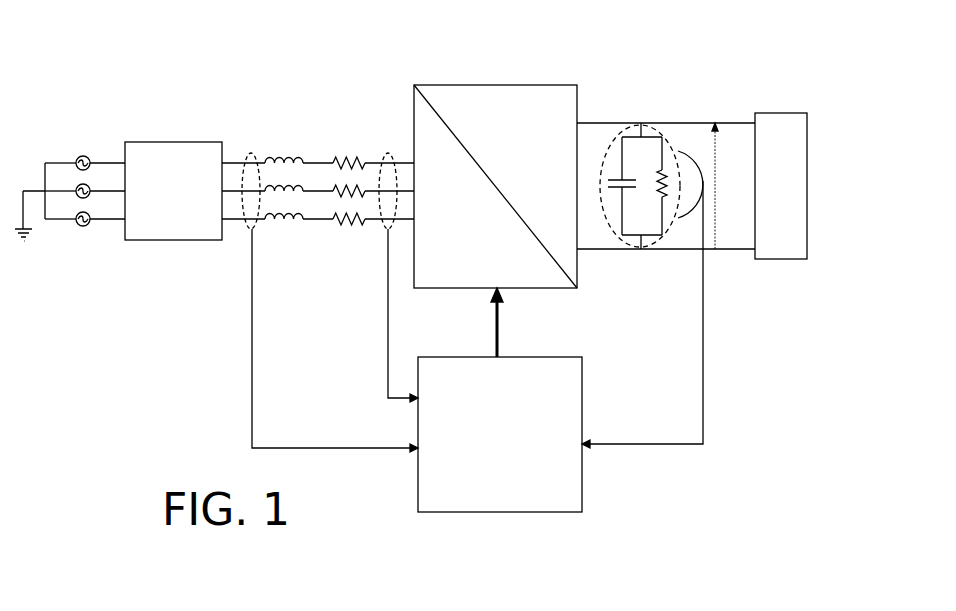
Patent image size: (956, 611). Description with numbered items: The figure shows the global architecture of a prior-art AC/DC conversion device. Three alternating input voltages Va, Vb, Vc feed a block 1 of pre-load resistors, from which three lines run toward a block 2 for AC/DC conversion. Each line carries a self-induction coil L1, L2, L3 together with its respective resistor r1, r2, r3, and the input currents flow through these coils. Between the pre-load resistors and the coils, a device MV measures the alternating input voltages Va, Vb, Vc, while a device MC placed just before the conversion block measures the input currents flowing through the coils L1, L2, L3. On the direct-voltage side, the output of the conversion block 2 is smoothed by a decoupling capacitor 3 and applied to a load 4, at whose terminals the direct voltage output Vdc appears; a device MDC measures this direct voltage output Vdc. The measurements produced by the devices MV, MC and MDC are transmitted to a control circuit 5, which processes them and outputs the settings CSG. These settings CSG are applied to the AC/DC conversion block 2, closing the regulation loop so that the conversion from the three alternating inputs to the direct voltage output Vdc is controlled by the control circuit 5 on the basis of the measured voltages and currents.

The block of pre-load resistors 1 is at (149, 150).
The block for AC/DC conversion 2 is at (494, 78).
The decoupling capacitor 3 is at (618, 136).
The load 4 is at (787, 118).
The control circuit 5 is at (517, 465).
The alternating input voltage Va is at (83, 155).
The alternating input voltage Vb is at (79, 186).
The alternating input voltage Vc is at (82, 227).
The self-induction coil L1 is at (288, 160).
The self-induction coil L2 is at (270, 188).
The self-induction coil L3 is at (290, 222).
The resistor r1 is at (360, 160).
The resistor r2 is at (335, 188).
The resistor r3 is at (350, 222).
The device for measuring alternating input voltages MV is at (236, 214).
The device for measuring input currents MC is at (394, 148).
The device for measuring the direct voltage output MDC is at (700, 150).
The direct voltage output Vdc is at (731, 186).
The settings CSG is at (518, 322).